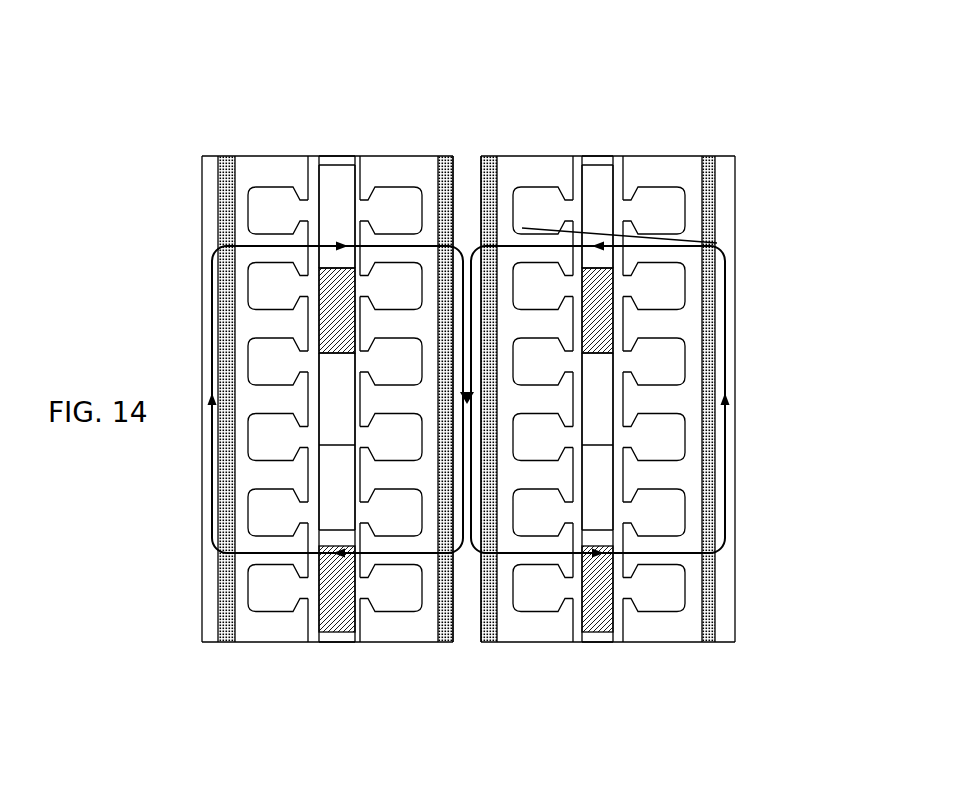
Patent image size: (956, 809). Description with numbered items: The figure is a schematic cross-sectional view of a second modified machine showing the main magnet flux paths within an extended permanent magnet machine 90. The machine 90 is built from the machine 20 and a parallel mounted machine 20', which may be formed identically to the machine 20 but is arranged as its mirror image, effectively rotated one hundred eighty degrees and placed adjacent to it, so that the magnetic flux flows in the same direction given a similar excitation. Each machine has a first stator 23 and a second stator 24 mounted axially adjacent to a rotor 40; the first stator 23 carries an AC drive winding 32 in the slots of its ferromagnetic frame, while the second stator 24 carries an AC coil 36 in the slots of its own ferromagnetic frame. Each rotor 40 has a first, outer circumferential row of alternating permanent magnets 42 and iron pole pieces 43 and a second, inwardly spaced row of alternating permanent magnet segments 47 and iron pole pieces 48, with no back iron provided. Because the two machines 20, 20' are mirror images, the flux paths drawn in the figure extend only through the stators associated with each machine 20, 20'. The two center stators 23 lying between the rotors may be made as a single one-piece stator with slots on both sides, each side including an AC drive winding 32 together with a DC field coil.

The permanent magnet machine 90 is at (157, 114).
The machine 20 is at (323, 363).
The parallel mounted machine 20' is at (634, 345).
The second stator 24 is at (191, 200).
The first stator 23 is at (441, 148).
The AC coil 36 is at (284, 641).
The AC drive winding 32 is at (398, 642).
The rotor 40 is at (320, 149).
The iron pole piece 43 is at (345, 175).
The permanent magnet segment 47 is at (325, 298).
The iron pole piece 48 is at (333, 487).
The permanent magnet 42 is at (340, 628).